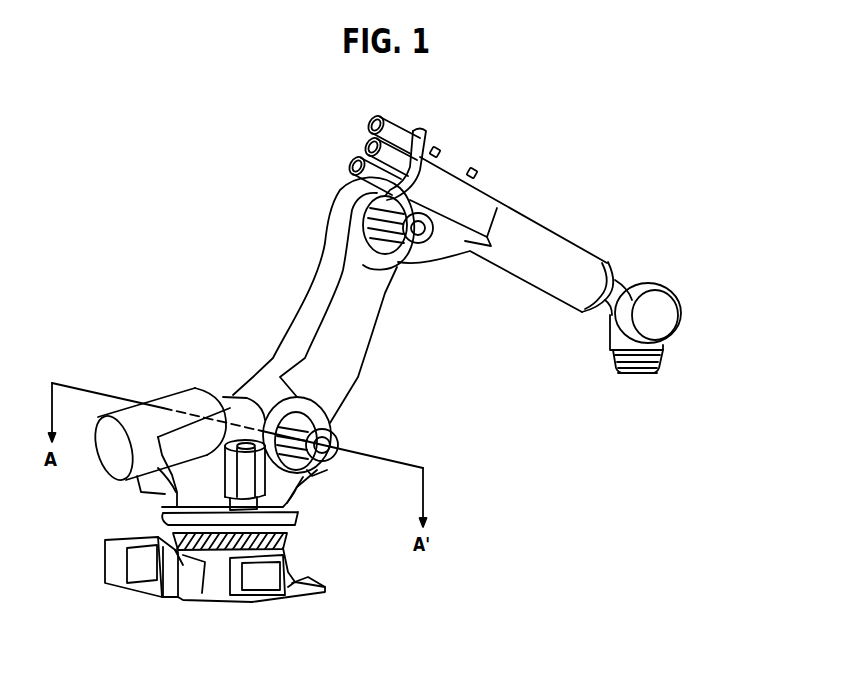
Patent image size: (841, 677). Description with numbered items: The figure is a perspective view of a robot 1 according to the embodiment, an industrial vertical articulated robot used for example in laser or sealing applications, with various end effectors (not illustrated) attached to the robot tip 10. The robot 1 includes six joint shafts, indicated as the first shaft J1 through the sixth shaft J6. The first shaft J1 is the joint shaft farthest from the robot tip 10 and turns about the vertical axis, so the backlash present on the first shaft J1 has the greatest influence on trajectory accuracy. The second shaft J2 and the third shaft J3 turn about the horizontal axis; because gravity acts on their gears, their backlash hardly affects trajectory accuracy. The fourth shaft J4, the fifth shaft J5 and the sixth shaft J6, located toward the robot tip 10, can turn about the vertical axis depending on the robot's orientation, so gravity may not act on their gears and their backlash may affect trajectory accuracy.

The robot 1 is at (569, 126).
The robot tip 10 is at (659, 379).
The first shaft J1 is at (303, 540).
The second shaft J2 is at (287, 386).
The third shaft J3 is at (340, 200).
The fourth shaft J4 is at (616, 249).
The fifth shaft J5 is at (669, 279).
The sixth shaft J6 is at (602, 363).